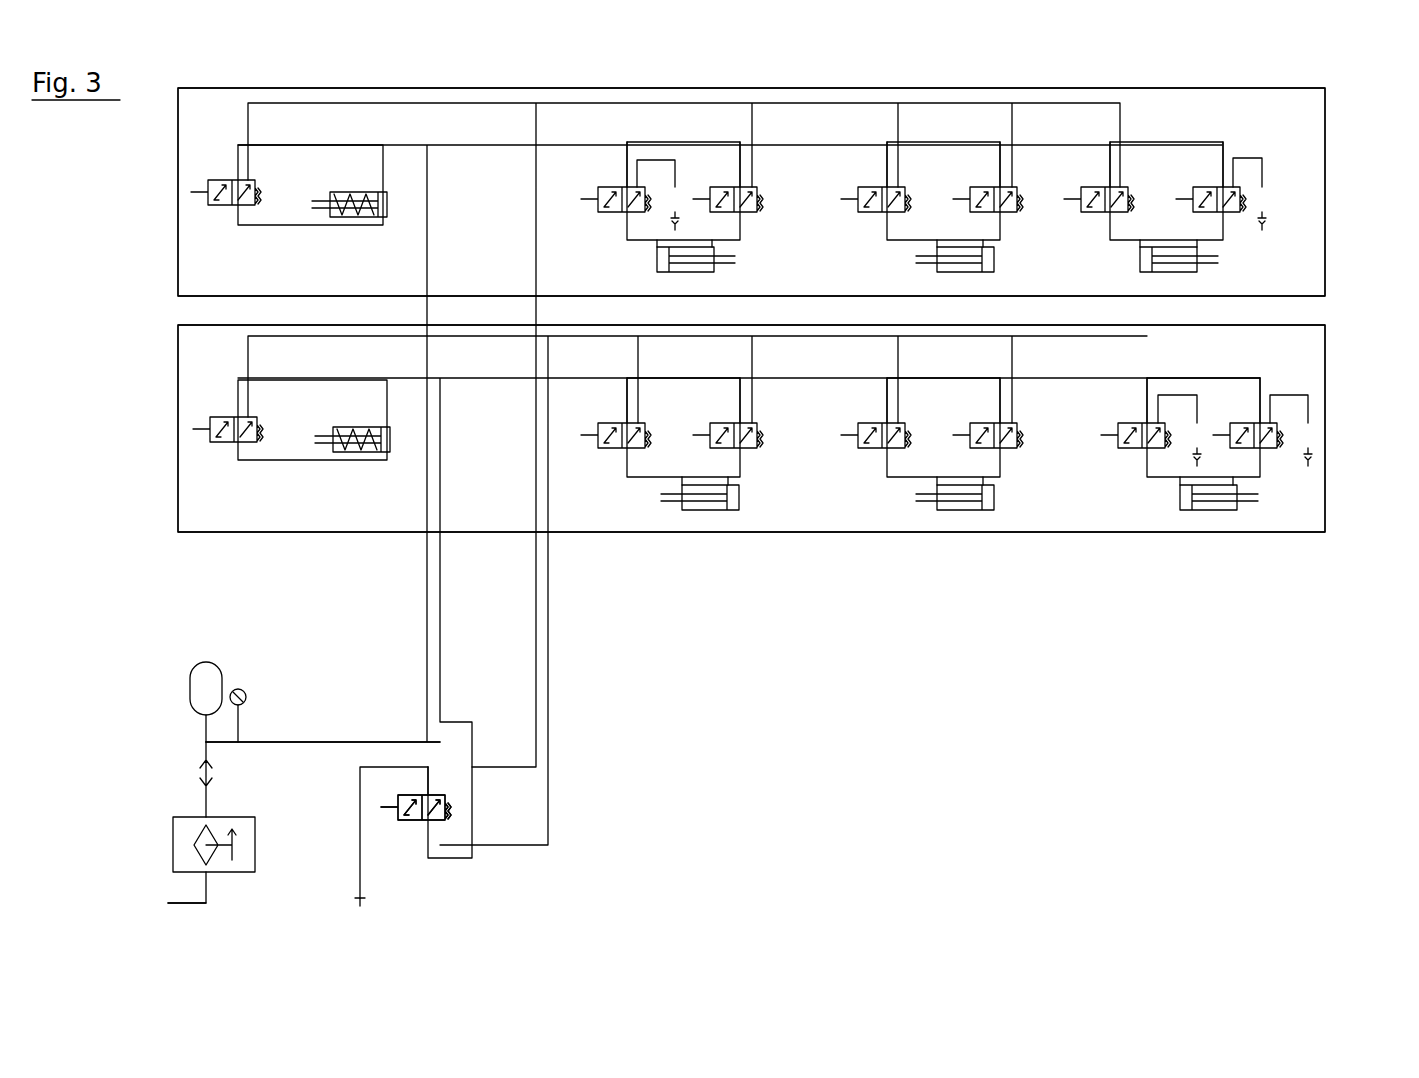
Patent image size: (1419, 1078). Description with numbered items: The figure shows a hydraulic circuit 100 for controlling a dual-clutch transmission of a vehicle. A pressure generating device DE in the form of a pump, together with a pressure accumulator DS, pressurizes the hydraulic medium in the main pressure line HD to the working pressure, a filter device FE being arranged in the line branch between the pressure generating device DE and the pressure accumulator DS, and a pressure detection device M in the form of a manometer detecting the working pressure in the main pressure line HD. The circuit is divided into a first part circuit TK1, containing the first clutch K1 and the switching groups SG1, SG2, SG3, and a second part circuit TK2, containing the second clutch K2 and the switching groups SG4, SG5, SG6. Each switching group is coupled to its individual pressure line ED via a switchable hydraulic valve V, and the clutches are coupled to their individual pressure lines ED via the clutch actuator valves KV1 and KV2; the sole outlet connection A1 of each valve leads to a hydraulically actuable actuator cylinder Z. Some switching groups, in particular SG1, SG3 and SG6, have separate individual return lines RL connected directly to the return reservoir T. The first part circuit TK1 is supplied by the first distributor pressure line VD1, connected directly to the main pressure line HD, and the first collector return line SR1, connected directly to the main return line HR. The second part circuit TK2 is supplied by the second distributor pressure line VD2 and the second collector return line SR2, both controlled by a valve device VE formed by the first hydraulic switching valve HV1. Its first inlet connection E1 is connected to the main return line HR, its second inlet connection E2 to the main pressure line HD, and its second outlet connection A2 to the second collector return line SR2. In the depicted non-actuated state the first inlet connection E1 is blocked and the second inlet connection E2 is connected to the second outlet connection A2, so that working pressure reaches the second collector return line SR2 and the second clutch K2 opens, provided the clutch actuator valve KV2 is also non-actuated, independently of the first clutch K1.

The hydraulic circuit 100 is at (138, 240).
The first part circuit TK1 is at (1330, 104).
The second part circuit TK2 is at (1330, 335).
The first collector return line SR1 is at (400, 103).
The second collector return line SR2 is at (300, 337).
The first distributor pressure line VD1 is at (335, 145).
The second distributor pressure line VD2 is at (310, 380).
The first clutch actuator valve KV1 is at (212, 212).
The second clutch actuator valve KV2 is at (212, 449).
The first clutch K1 is at (360, 225).
The second clutch K2 is at (355, 462).
The first inlet connection E1 is at (315, 473).
The second inlet connection E2 is at (358, 473).
The outlet connection A1 is at (338, 535).
The second outlet connection A2 is at (454, 833).
The first switching group SG1 is at (652, 255).
The second switching group SG2 is at (870, 248).
The third switching group SG3 is at (1138, 250).
The fourth switching group SG4 is at (677, 512).
The fifth switching group SG5 is at (955, 512).
The sixth switching group SG6 is at (1200, 512).
The individual pressure line ED is at (238, 180).
The individual return line RL is at (248, 128).
The switchable hydraulic valve V is at (582, 214).
The actuator cylinder Z is at (352, 192).
The return reservoir T is at (318, 922).
The pressure accumulator DS is at (205, 662).
The pressure detection device M is at (240, 689).
The main pressure line HD is at (330, 742).
The main return line HR is at (358, 792).
The filter device FE is at (172, 845).
The pressure generating device DE is at (168, 903).
The valve device VE is at (372, 825).
The first hydraulic switching valve HV1 is at (416, 807).